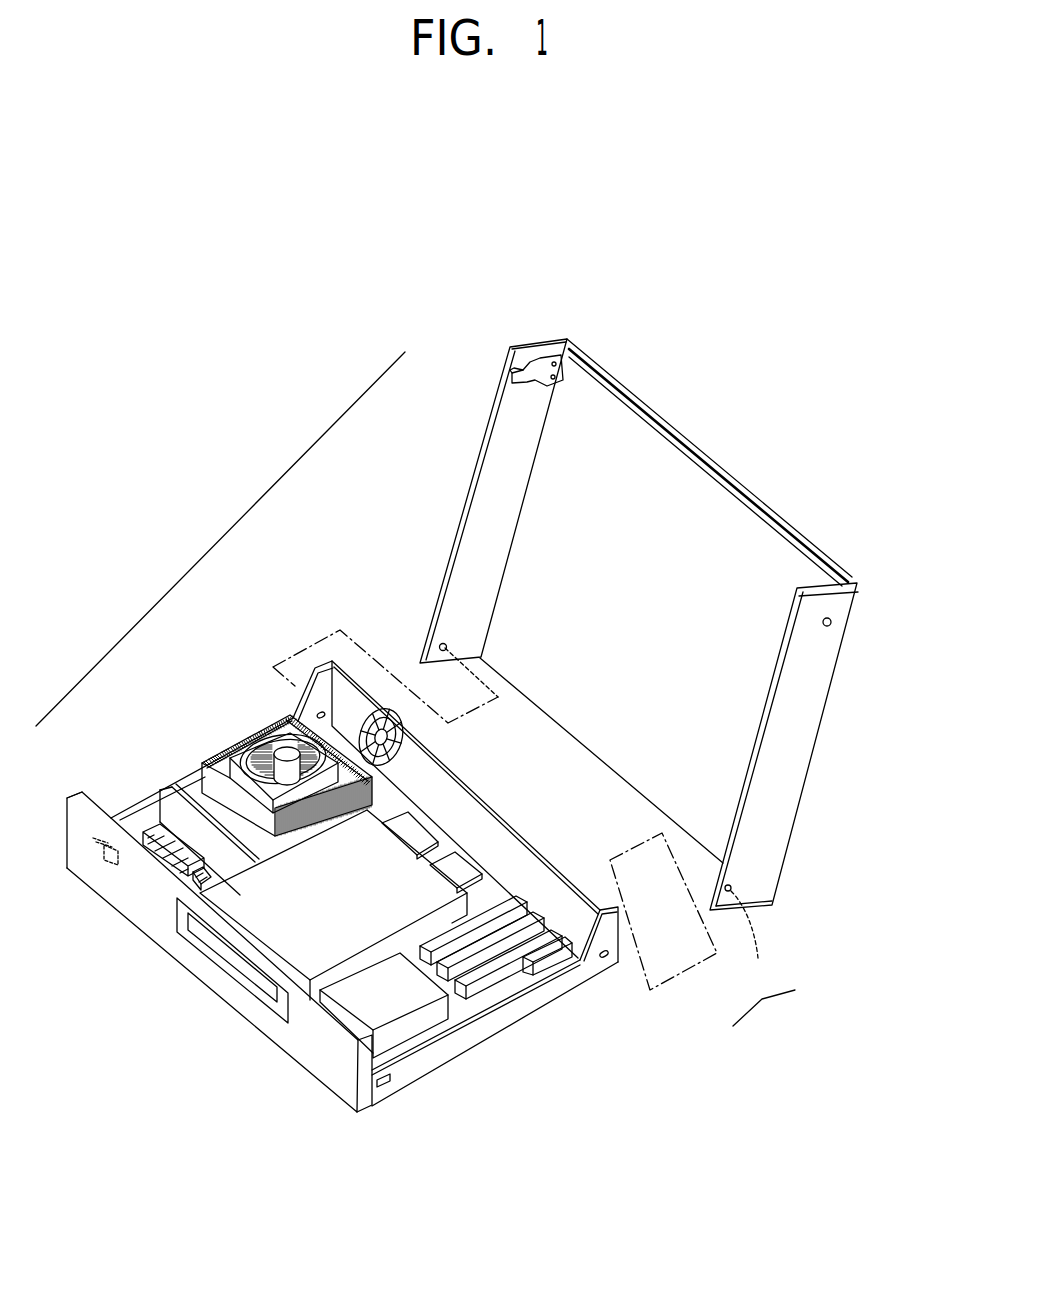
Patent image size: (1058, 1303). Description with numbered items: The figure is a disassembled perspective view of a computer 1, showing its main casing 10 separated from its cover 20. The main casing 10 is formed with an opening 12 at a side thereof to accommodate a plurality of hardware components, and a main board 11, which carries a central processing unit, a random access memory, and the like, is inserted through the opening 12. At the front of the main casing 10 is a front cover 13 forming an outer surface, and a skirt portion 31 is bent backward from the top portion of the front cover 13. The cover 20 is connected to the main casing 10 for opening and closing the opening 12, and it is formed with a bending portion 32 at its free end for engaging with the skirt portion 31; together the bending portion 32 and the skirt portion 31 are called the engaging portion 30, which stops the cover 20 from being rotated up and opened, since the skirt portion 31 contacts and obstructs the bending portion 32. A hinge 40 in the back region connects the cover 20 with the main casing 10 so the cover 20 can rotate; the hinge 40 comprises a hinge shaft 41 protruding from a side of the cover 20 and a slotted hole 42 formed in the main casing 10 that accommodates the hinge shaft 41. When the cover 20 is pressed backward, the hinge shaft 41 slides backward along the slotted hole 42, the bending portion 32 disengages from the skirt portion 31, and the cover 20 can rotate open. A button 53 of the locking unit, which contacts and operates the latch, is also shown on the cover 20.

The computer 1 is at (173, 352).
The main casing 10 is at (433, 1060).
The main board 11 is at (487, 1000).
The opening 12 is at (485, 889).
The front cover 13 is at (345, 1114).
The cover 20 is at (822, 720).
The engaging portion 30 is at (240, 520).
The skirt portion 31 is at (72, 791).
The bending portion 32 is at (500, 350).
The hinge 40 is at (781, 1037).
The hinge shaft 41 is at (746, 908).
The slotted hole 42 is at (612, 956).
The button 53 is at (832, 623).